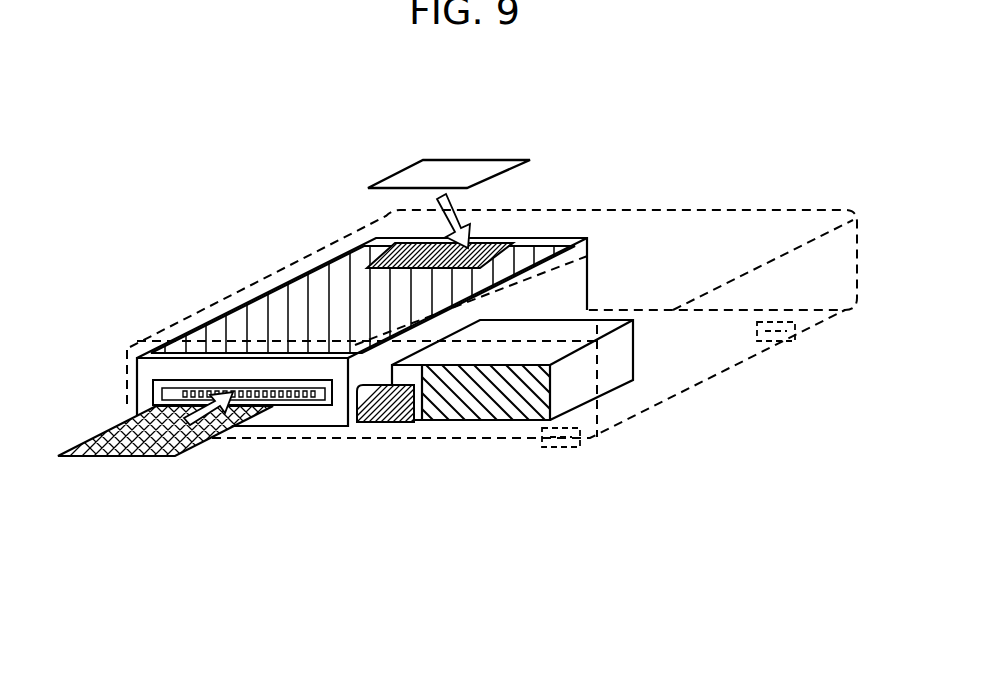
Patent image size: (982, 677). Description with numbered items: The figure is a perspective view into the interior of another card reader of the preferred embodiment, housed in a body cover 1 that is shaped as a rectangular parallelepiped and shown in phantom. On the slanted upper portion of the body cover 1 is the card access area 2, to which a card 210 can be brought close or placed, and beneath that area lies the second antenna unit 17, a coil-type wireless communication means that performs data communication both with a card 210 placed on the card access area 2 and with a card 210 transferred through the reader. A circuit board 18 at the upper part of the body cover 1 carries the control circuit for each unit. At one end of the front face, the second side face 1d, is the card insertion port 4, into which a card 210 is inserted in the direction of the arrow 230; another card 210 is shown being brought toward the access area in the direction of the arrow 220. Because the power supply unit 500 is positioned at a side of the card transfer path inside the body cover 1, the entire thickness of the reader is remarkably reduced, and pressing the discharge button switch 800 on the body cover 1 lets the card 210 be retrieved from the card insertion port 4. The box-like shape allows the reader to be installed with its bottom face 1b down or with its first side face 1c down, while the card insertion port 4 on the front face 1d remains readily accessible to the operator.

The body cover 1 is at (195, 312).
The bottom face 1b is at (720, 345).
The first side face 1c is at (810, 278).
The second side face (front face) 1d is at (493, 432).
The card access area 2 is at (360, 237).
The card insertion port 4 is at (297, 402).
The second antenna unit 17 is at (497, 238).
The circuit board 18 is at (293, 303).
The card 210 is at (413, 177).
The insertion direction arrow 220 is at (455, 200).
The arrow 230 is at (220, 437).
The power supply unit 500 is at (512, 383).
The discharge button switch 800 is at (393, 420).